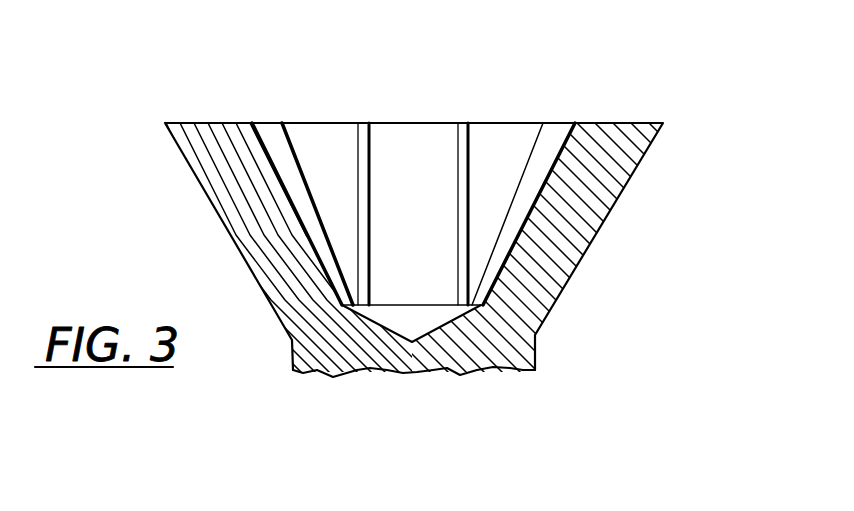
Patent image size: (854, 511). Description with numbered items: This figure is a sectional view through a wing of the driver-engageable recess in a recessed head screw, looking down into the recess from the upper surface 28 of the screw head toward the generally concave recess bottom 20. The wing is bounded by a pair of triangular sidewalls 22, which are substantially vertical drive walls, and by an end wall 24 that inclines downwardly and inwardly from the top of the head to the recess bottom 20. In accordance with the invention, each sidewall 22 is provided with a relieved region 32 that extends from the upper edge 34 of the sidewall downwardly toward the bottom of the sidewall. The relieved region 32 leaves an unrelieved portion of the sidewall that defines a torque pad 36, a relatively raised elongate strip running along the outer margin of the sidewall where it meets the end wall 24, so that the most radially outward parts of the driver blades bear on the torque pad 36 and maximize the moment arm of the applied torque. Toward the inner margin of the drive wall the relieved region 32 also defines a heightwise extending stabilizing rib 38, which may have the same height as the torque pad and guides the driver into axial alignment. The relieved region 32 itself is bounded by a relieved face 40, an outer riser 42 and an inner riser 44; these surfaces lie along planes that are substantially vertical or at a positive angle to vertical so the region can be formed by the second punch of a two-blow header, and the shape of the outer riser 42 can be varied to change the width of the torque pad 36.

The upper surface 28 is at (633, 121).
The sidewall 22 is at (305, 148).
The recess bottom 20 is at (430, 332).
The relieved face 40 is at (353, 204).
The relieved region 32 is at (340, 148).
The upper edge 34 is at (267, 122).
The torque pad 36 is at (285, 160).
The end wall 24 is at (280, 188).
The stabilizing rib 38 is at (365, 240).
The outer riser 42 is at (320, 226).
The inner riser 44 is at (358, 250).